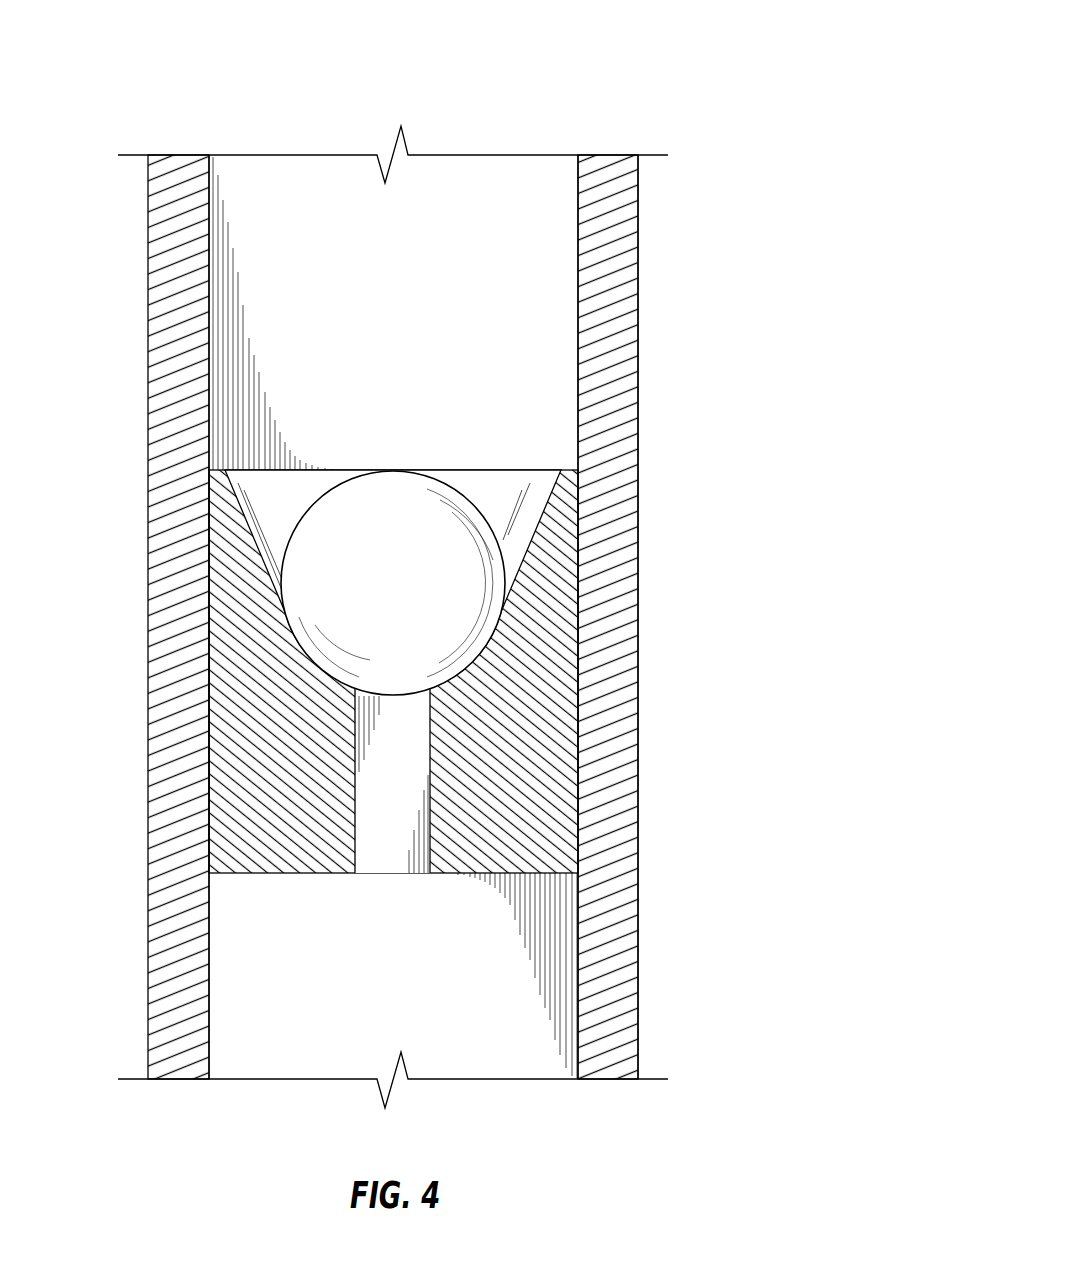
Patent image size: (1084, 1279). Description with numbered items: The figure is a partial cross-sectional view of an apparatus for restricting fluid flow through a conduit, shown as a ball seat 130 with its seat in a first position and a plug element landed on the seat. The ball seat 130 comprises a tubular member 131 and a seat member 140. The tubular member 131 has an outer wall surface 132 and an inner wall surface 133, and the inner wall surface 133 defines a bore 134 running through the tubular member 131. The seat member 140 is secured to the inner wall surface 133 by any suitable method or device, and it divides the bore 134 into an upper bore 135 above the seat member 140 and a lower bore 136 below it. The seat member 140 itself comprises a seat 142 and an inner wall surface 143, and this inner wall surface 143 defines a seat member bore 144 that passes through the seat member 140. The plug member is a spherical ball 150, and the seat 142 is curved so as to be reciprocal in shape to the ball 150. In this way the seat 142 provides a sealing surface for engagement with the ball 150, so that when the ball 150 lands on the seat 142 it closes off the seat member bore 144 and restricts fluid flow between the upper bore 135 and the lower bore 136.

The ball seat 130 is at (704, 60).
The tubular member 131 is at (627, 322).
The outer wall surface 132 is at (638, 389).
The inner wall surface 133 is at (578, 285).
The bore 134 is at (415, 296).
The upper bore 135 is at (235, 315).
The lower bore 136 is at (235, 963).
The seat member 140 is at (550, 757).
The seat 142 is at (300, 655).
The inner wall surface 143 is at (430, 853).
The seat member bore 144 is at (414, 796).
The spherical ball 150 is at (414, 596).